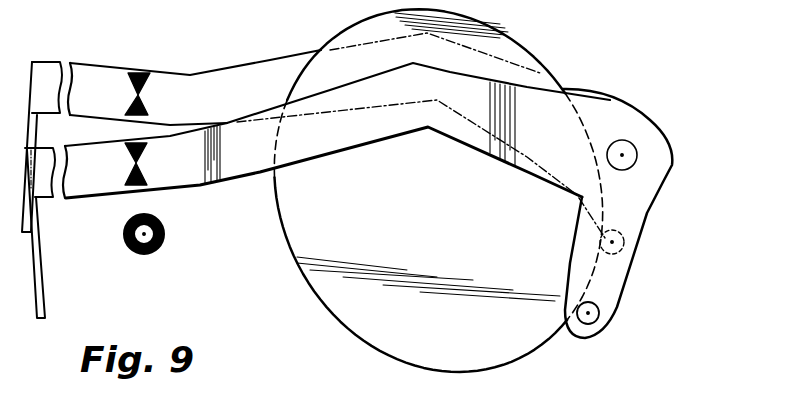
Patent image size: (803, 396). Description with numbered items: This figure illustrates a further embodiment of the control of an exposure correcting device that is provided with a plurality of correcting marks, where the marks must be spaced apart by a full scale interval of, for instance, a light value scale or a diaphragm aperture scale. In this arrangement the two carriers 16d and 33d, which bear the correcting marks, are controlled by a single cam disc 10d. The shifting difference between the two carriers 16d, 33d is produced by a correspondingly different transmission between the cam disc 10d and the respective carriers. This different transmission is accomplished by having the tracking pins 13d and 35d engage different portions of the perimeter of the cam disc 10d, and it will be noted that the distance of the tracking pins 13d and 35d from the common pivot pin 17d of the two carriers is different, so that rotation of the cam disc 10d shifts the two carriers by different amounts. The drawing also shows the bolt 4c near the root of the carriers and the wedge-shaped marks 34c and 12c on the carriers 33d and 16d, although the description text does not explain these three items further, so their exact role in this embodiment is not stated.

The carrier 33d is at (211, 96).
The carrier 16d is at (233, 166).
The wedge stop 34c is at (134, 95).
The wedge 12c is at (140, 166).
The pivot bolt 4c is at (123, 233).
The cam disc 10d is at (312, 270).
The common pivot pin 17d is at (623, 155).
The tracking pin 35d is at (620, 242).
The tracking pin 13d is at (597, 315).